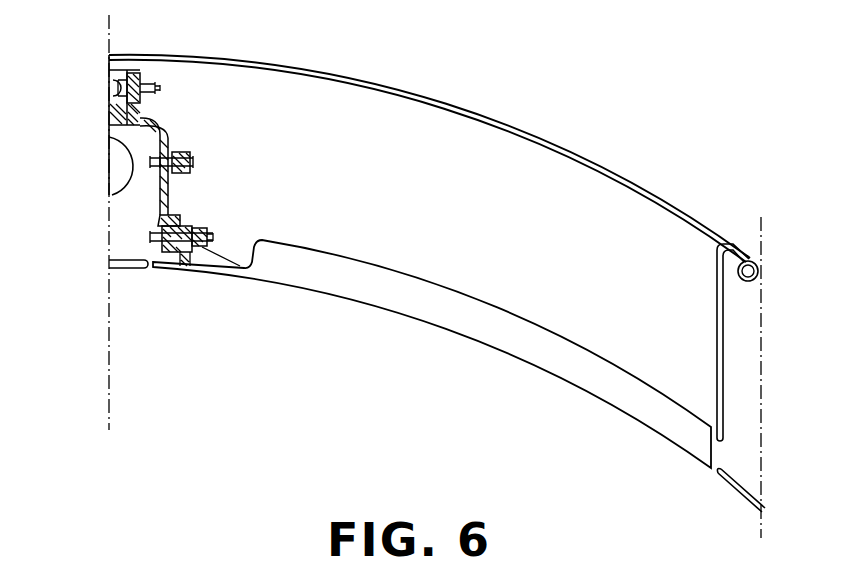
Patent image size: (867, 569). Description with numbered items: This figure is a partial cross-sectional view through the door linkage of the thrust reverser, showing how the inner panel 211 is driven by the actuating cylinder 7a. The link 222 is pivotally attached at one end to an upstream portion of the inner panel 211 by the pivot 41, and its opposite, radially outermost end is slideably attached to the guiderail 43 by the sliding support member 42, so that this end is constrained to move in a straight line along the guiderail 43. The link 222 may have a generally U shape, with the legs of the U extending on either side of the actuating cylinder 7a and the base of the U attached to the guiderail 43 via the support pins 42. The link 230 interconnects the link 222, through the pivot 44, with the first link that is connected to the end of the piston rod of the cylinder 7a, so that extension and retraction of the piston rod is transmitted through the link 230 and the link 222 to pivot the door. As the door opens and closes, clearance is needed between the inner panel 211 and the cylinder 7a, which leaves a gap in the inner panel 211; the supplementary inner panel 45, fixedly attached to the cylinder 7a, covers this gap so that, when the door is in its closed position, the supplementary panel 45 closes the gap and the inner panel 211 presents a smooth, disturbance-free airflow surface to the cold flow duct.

The guiderail 43 is at (110, 82).
The sliding support member 42 is at (140, 78).
The link 222 is at (168, 130).
The actuating cylinder 7a is at (122, 162).
The link 230 is at (187, 172).
The pivot 44 is at (193, 210).
The pivot 41 is at (185, 252).
The supplementary inner panel 45 is at (137, 270).
The inner panel 211 is at (323, 268).